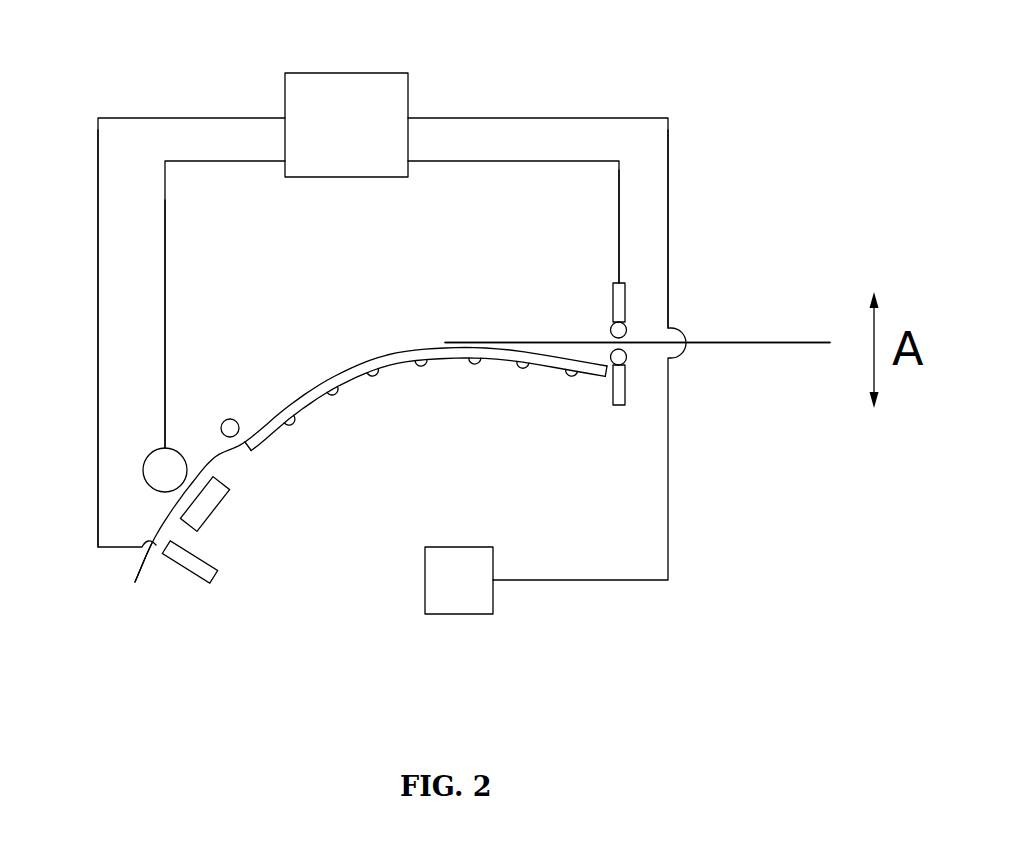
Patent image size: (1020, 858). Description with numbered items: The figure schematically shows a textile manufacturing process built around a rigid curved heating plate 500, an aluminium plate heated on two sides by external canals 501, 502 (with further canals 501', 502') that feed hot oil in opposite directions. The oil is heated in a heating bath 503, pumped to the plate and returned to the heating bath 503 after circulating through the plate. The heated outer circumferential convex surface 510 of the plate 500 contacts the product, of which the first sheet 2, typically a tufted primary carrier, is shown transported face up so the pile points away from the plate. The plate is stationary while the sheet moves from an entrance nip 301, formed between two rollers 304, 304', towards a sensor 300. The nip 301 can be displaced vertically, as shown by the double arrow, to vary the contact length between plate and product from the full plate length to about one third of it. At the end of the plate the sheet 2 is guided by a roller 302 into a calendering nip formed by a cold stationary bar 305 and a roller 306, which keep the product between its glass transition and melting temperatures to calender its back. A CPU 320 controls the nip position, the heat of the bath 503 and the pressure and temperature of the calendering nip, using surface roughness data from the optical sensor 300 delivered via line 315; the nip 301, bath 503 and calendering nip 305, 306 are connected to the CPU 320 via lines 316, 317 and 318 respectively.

The first sheet 2 is at (138, 572).
The sensor 300 is at (180, 571).
The entrance nip 301 is at (585, 332).
The roller 302 is at (236, 419).
The roller 304 is at (672, 377).
The roller 304' is at (675, 310).
The cold stationary bar 305 is at (226, 505).
The roller 306 is at (157, 455).
The line 315 is at (98, 298).
The line 316 is at (668, 212).
The line 317 is at (619, 214).
The line 318 is at (165, 268).
The CPU 320 is at (372, 73).
The rigid curved heating plate 500 is at (256, 450).
The external canal 501 is at (363, 417).
The external canal 501' is at (514, 396).
The external canal 502 is at (406, 394).
The external canal 502' is at (570, 412).
The heating bath 503 is at (455, 614).
The outer circumferential surface 510 is at (388, 356).